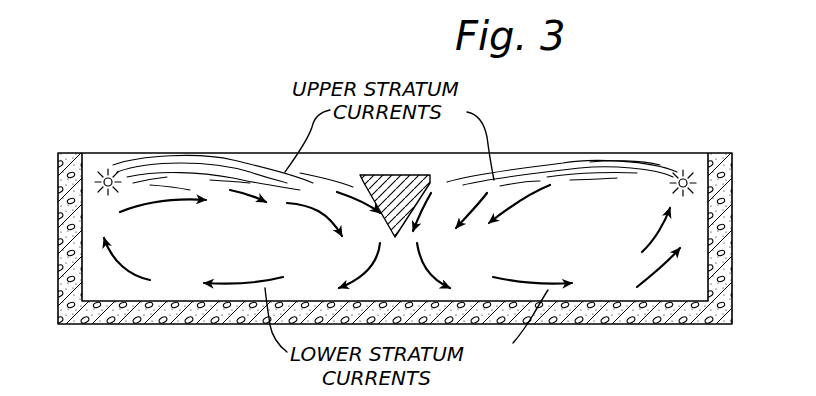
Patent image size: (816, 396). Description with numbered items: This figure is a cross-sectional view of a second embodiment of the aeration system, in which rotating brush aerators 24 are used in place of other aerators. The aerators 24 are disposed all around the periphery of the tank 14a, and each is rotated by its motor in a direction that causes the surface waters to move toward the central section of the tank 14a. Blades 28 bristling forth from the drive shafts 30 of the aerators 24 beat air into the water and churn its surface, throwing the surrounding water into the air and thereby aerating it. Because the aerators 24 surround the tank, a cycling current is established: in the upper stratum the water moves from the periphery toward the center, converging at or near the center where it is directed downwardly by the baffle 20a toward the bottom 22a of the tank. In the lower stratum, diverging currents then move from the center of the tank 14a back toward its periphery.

The tank 14a is at (734, 228).
The bottom 22a is at (132, 292).
The baffle 20a is at (394, 172).
The rotating brush aerator 24 is at (111, 169).
The blades 28 is at (105, 172).
The drive shaft 30 is at (102, 185).